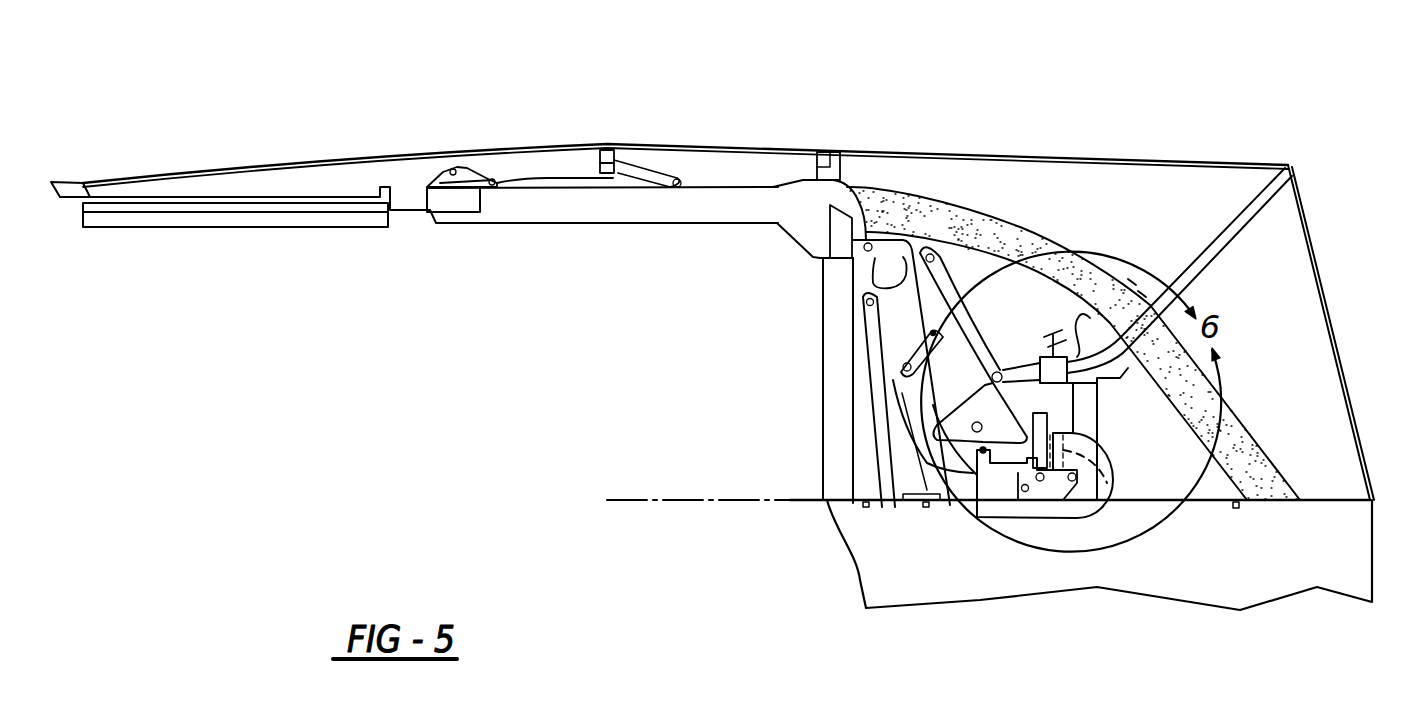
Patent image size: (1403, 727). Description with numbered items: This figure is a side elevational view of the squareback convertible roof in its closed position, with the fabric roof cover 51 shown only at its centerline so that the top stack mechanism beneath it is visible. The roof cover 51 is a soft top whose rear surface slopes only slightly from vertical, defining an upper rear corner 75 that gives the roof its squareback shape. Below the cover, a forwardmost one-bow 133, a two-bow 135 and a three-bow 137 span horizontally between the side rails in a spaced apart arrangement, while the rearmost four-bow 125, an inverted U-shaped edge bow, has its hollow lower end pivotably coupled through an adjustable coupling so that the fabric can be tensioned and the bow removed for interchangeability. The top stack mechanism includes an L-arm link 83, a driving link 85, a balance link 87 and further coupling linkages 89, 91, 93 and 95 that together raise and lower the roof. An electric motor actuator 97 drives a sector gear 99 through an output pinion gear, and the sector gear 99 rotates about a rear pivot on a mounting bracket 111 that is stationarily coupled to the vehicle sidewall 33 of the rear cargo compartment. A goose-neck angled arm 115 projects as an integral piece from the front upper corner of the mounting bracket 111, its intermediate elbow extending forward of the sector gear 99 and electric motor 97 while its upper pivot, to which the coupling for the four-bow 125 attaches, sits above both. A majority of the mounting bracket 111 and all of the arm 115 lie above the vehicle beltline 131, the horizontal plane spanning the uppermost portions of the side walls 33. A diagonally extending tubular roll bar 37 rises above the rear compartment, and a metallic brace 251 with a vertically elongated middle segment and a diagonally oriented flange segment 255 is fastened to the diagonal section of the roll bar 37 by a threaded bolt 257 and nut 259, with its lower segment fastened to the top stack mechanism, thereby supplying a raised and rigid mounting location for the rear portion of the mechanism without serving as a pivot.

The sidewall 33 is at (1263, 573).
The roll bar 37 is at (1240, 443).
The roof cover 51 is at (953, 153).
The upper rear corner 75 is at (1288, 165).
The L-arm link 83 is at (898, 465).
The driving link 85 is at (917, 310).
The balance link 87 is at (972, 328).
The coupling linkage 89 is at (443, 172).
The coupling linkage 91 is at (547, 180).
The coupling linkage 93 is at (873, 270).
The coupling linkage 95 is at (907, 363).
The electric motor actuator 97 is at (1113, 493).
The sector gear 99 is at (1153, 480).
The mounting bracket 111 is at (1053, 490).
The goose-neck angled arm 115 is at (947, 423).
The four-bow 125 is at (1240, 222).
The beltline 131 is at (743, 502).
The one-bow 133 is at (88, 189).
The two-bow 135 is at (608, 153).
The three-bow 137 is at (837, 157).
The brace 251 is at (1087, 407).
The flange segment 255 is at (1090, 333).
The threaded bolt 257 is at (1053, 335).
The nut 259 is at (1130, 280).